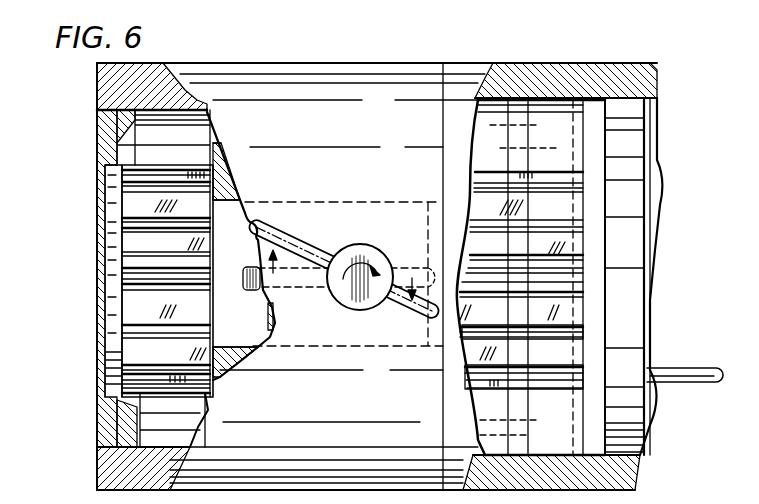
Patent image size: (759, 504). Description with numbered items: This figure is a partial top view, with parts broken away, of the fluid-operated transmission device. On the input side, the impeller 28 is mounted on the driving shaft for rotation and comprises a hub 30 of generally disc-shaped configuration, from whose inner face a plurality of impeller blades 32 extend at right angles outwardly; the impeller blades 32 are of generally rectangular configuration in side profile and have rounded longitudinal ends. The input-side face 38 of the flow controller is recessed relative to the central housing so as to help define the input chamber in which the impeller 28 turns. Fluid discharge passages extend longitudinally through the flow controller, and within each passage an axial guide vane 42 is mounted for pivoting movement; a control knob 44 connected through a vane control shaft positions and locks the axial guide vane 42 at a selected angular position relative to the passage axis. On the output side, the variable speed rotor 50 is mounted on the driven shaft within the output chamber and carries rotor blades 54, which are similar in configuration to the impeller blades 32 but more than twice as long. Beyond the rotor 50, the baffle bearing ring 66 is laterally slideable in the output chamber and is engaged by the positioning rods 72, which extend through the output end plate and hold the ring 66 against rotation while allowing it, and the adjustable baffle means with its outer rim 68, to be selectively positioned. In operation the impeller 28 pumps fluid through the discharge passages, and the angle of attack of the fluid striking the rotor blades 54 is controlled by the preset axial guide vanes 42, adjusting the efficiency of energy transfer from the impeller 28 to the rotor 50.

The impeller 28 is at (160, 333).
The hub 30 is at (112, 250).
The impeller blades 32 is at (153, 222).
The input-side face 38 is at (118, 146).
The axial guide vanes 42 is at (302, 230).
The control knobs 44 is at (345, 244).
The variable speed rotor 50 is at (538, 212).
The rotor blades 54 is at (549, 366).
The baffle bearing ring 66 is at (628, 148).
The outer rim 68 is at (590, 218).
The positioning rods 72 is at (690, 371).